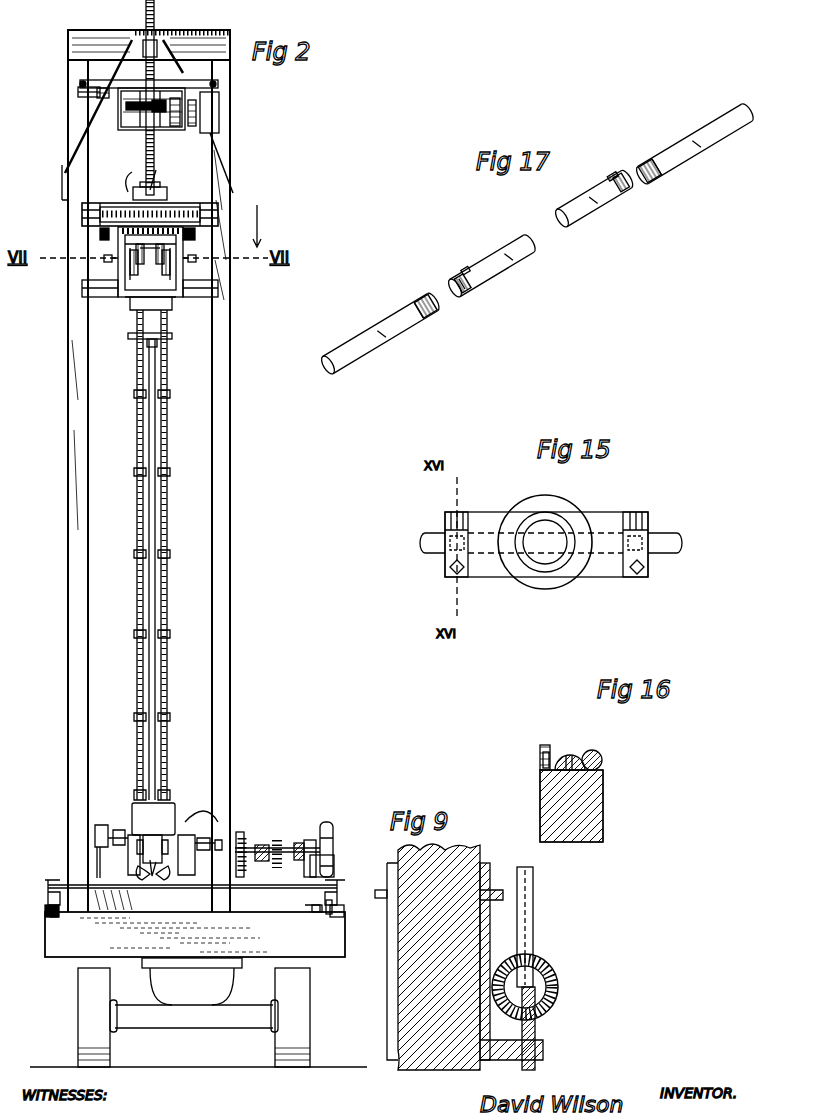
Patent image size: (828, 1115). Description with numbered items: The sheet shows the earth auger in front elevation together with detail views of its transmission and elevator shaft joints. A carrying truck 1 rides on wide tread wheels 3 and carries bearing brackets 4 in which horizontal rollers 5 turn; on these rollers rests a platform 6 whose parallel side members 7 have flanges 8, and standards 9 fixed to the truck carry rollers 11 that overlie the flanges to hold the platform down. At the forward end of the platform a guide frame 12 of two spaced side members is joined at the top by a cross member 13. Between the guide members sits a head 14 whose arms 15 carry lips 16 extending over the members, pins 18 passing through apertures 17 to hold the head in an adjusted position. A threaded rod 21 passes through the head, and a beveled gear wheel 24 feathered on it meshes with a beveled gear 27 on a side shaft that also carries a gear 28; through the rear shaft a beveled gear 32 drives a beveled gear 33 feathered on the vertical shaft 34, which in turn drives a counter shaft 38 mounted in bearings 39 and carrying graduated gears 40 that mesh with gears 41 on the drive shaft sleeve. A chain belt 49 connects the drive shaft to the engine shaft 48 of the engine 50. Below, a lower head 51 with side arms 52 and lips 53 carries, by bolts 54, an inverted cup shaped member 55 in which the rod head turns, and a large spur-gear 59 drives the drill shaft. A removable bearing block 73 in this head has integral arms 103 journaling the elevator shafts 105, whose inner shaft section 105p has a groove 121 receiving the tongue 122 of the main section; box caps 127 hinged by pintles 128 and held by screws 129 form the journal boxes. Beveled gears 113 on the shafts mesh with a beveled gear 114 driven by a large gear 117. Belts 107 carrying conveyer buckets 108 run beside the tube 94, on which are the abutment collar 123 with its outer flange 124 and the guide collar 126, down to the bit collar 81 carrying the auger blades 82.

In FIG. 2, the carrying truck 1 is at (258, 955).
In FIG. 2, the wheels 3 is at (110, 990).
In FIG. 2, the bearing brackets 4 is at (318, 912).
In FIG. 2, the horizontal rollers 5 is at (318, 906).
In FIG. 2, the platform 6 is at (272, 915).
In FIG. 2, the side members 7 is at (62, 896).
In FIG. 2, the flanges 8 is at (54, 920).
In FIG. 2, the standards 9 is at (46, 915).
In FIG. 2, the rollers 11 is at (50, 896).
In FIG. 2, the guide frame 12 is at (231, 356).
In FIG. 9, the guide frame 12 is at (470, 848).
In FIG. 2, the cross member 13 is at (104, 46).
In FIG. 2, the head 14 is at (149, 75).
In FIG. 2, the arms 15 is at (103, 88).
In FIG. 2, the lips 16 is at (78, 91).
In FIG. 2, the apertures 17 is at (88, 152).
In FIG. 2, the pins 18 is at (80, 82).
In FIG. 2, the threaded rod 21 is at (146, 150).
In FIG. 2, the beveled gear wheel 24 is at (135, 108).
In FIG. 2, the beveled gear 27 is at (174, 126).
In FIG. 2, the gear 28 is at (192, 130).
In FIG. 9, the beveled gear 32 is at (558, 987).
In FIG. 9, the beveled gear 33 is at (548, 968).
In FIG. 9, the vertical shaft 34 is at (534, 908).
In FIG. 2, the counter shaft 38 is at (334, 858).
In FIG. 2, the bearings 39 is at (310, 838).
In FIG. 2, the graduated gears 40 is at (260, 843).
In FIG. 2, the gears 41 is at (280, 838).
In FIG. 2, the engine shaft 48 is at (244, 836).
In FIG. 2, the chain belt 49 is at (330, 830).
In FIG. 2, the engine 50 is at (158, 832).
In FIG. 2, the head 51 is at (162, 185).
In FIG. 2, the side arms 52 is at (118, 200).
In FIG. 2, the lips 53 is at (82, 212).
In FIG. 2, the bolts 54 is at (163, 168).
In FIG. 2, the inverted cup shaped member 55 is at (129, 174).
In FIG. 2, the spur-gear 59 is at (160, 208).
In FIG. 15, the bearing block 73 is at (608, 516).
In FIG. 2, the collar 81 is at (140, 882).
In FIG. 2, the auger blades 82 is at (164, 882).
In FIG. 2, the tube 94 is at (156, 750).
In FIG. 16, the arms 103 is at (590, 812).
In FIG. 2, the shafts 105 is at (104, 258).
In FIG. 17, the shafts 105 is at (537, 243).
In FIG. 15, the shafts 105 is at (426, 552).
In FIG. 17, the shaft section 105p is at (540, 233).
In FIG. 15, the shaft section 105p is at (486, 560).
In FIG. 16, the shaft section 105p is at (604, 782).
In FIG. 2, the belts 107 is at (140, 430).
In FIG. 2, the conveyer buckets 108 is at (150, 472).
In FIG. 2, the beveled gear 113 is at (110, 296).
In FIG. 2, the beveled gear 114 is at (158, 246).
In FIG. 2, the large gear 117 is at (100, 234).
In FIG. 17, the groove 121 is at (470, 290).
In FIG. 17, the tongue 122 is at (430, 314).
In FIG. 16, the tongue 122 is at (540, 760).
In FIG. 2, the abutment collar 123 is at (158, 345).
In FIG. 2, the outer flange 124 is at (160, 336).
In FIG. 2, the guide collar 126 is at (140, 812).
In FIG. 15, the box caps 127 is at (450, 542).
In FIG. 16, the box caps 127 is at (573, 752).
In FIG. 15, the pintles 128 is at (445, 518).
In FIG. 16, the pintles 128 is at (600, 762).
In FIG. 15, the screws 129 is at (450, 572).
In FIG. 16, the screws 129 is at (545, 745).